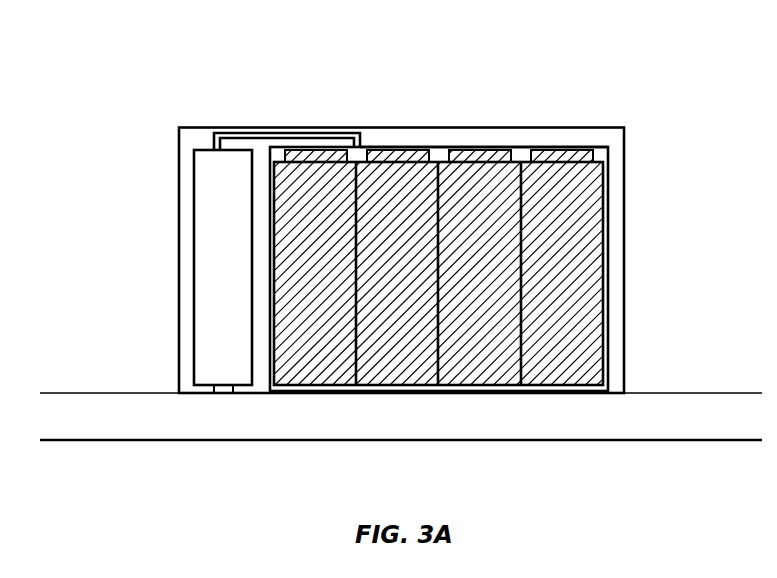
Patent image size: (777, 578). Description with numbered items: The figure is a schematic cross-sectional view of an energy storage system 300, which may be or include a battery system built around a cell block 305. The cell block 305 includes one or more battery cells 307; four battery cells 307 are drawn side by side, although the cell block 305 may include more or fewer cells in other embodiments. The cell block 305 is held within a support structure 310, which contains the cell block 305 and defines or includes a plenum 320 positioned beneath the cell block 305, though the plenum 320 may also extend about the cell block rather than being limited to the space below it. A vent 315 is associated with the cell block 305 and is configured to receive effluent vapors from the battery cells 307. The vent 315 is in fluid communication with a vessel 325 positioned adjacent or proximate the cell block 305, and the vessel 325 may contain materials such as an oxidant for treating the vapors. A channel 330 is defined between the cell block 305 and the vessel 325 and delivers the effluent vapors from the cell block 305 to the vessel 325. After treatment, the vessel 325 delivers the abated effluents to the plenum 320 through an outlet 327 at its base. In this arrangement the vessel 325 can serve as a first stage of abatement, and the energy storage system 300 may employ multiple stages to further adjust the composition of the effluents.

The energy storage system 300 is at (170, 76).
The cell block 305 is at (610, 150).
The battery cells 307 is at (603, 233).
The support structure 310 is at (475, 128).
The vent 315 is at (365, 138).
The plenum 320 is at (597, 441).
The vessel 325 is at (194, 198).
The outlet 327 is at (222, 395).
The channel 330 is at (265, 130).